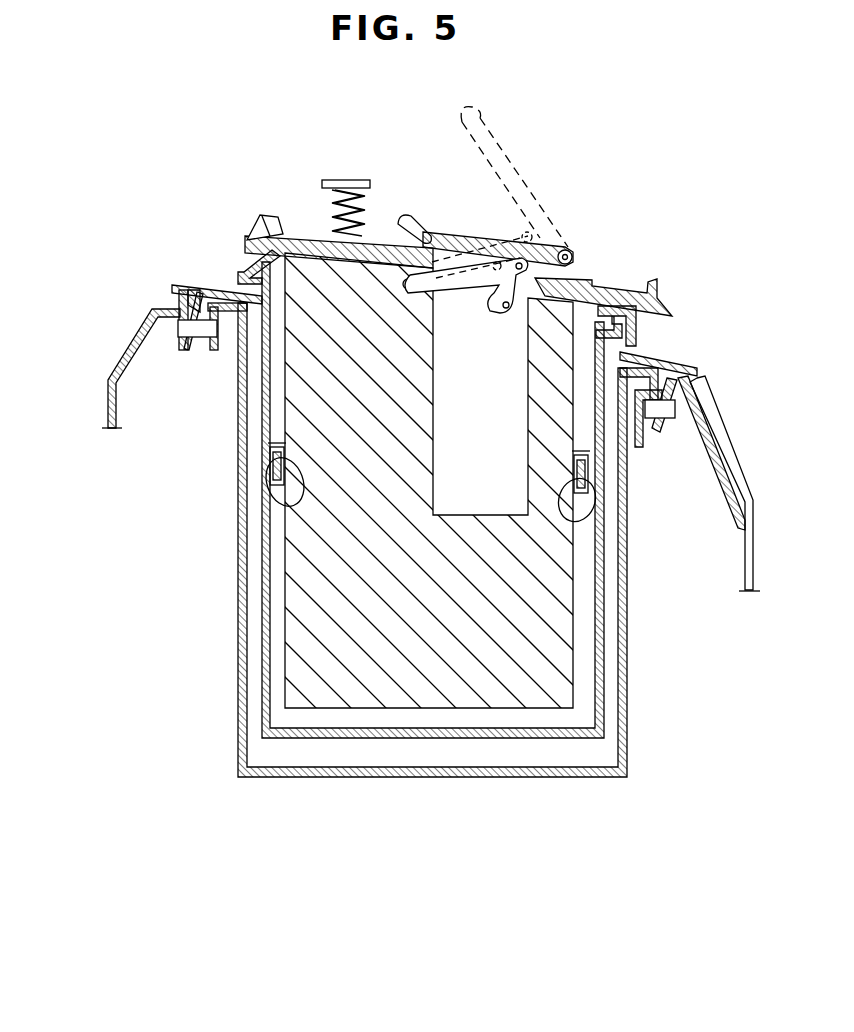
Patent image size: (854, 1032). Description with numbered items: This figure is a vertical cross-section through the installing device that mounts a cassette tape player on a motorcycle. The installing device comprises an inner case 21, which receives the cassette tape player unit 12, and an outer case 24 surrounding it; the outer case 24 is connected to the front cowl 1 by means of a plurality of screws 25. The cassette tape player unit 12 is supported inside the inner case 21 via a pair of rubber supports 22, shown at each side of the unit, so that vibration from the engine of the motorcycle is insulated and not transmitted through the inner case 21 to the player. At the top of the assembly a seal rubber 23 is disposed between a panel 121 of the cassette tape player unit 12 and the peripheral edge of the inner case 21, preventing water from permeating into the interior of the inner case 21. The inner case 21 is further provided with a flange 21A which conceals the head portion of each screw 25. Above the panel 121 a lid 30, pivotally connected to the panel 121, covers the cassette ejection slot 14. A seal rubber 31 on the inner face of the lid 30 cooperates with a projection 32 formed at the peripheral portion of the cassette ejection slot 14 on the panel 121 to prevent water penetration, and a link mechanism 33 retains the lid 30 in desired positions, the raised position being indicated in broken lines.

The front cowl 1 is at (126, 368).
The cassette tape player unit 12 is at (437, 703).
The cassette ejection slot 14 is at (550, 289).
The inner case 21 is at (264, 416).
The flange 21A is at (200, 289).
The rubber supports 22 is at (268, 482).
The seal rubber 23 is at (251, 258).
The outer case 24 is at (626, 722).
The screws 25 is at (180, 303).
The lid 30 is at (410, 226).
The seal rubber 31 is at (470, 240).
The projection 32 is at (399, 256).
The link mechanism 33 is at (466, 302).
The panel 121 is at (274, 226).